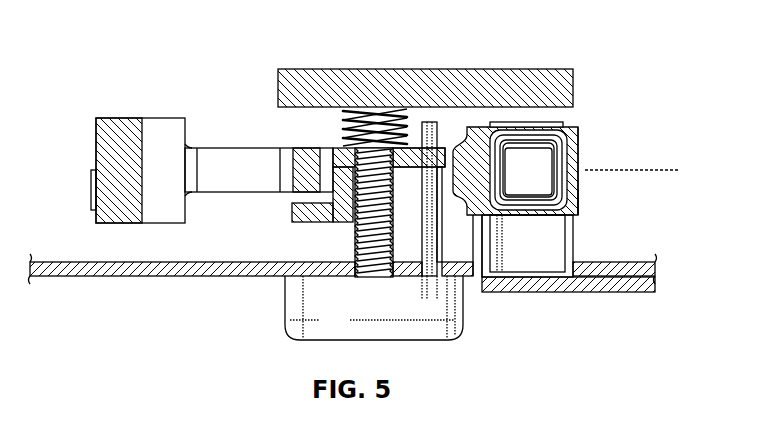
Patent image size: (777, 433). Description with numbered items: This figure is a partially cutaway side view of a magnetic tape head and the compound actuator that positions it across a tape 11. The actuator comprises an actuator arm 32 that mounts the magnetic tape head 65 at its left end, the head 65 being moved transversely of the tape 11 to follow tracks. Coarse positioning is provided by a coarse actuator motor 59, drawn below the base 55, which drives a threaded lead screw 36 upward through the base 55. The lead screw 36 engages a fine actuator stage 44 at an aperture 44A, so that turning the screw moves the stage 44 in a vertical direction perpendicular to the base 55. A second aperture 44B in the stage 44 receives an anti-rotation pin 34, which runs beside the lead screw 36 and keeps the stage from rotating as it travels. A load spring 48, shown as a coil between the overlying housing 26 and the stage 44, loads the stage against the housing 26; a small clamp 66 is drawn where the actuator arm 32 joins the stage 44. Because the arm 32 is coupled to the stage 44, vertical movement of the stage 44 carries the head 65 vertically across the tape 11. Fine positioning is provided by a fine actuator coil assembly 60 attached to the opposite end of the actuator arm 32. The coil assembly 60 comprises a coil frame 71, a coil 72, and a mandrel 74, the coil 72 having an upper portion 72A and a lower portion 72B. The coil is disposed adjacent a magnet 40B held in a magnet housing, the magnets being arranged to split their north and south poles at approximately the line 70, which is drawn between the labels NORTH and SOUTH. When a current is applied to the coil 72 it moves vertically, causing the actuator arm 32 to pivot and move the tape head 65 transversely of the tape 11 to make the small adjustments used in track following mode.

The tape 11 is at (93, 192).
The housing 26 is at (312, 69).
The actuator arm 32 is at (243, 146).
The anti-rotation pin 34 is at (427, 120).
The lead screw 36 is at (355, 235).
The magnet 40B is at (523, 122).
The fine actuator stage 44 is at (333, 167).
The aperture 44A is at (400, 162).
The aperture 44B is at (443, 146).
The load spring 48 is at (342, 125).
The base 55 is at (78, 278).
The coarse actuator motor 59 is at (285, 298).
The fine actuator coil assembly 60 is at (586, 142).
The magnetic tape head 65 is at (165, 117).
The clamp 66 is at (292, 208).
The line 70 is at (673, 170).
The coil frame 71 is at (580, 202).
The coil 72 is at (565, 147).
The upper portion 72A is at (545, 130).
The lower portion 72B is at (528, 214).
The mandrel 74 is at (538, 183).